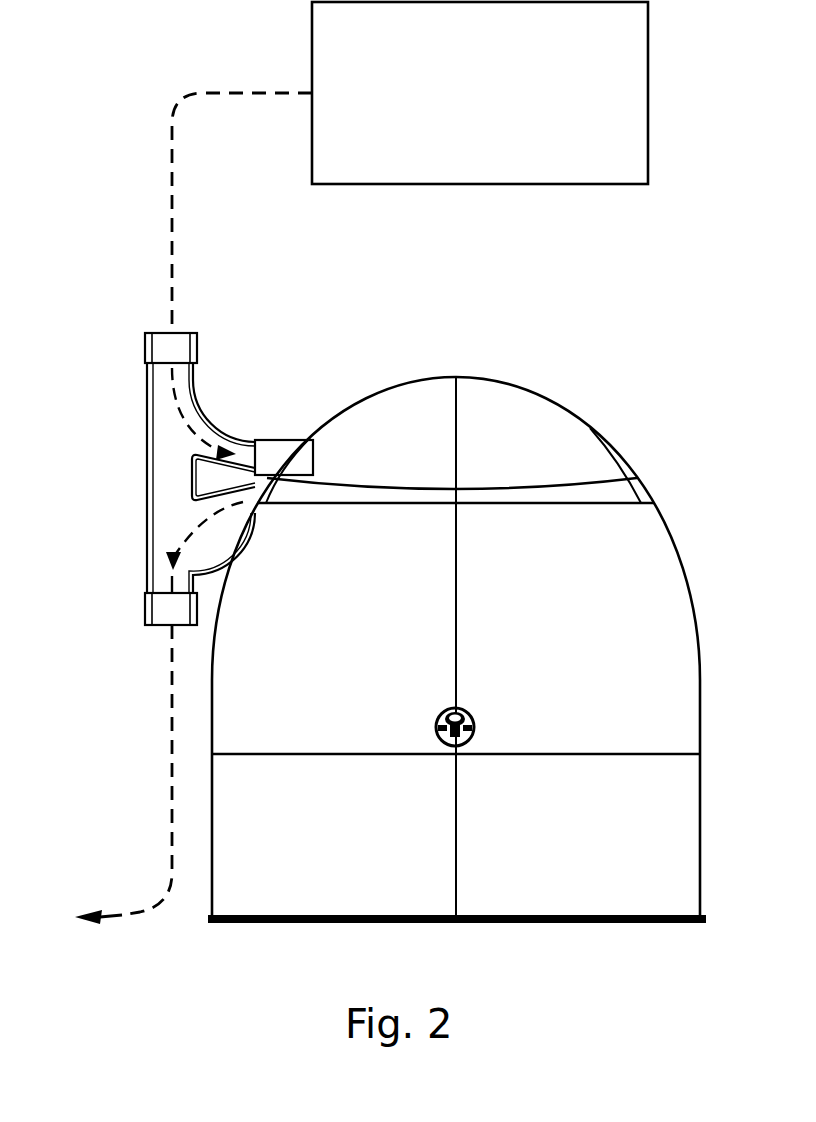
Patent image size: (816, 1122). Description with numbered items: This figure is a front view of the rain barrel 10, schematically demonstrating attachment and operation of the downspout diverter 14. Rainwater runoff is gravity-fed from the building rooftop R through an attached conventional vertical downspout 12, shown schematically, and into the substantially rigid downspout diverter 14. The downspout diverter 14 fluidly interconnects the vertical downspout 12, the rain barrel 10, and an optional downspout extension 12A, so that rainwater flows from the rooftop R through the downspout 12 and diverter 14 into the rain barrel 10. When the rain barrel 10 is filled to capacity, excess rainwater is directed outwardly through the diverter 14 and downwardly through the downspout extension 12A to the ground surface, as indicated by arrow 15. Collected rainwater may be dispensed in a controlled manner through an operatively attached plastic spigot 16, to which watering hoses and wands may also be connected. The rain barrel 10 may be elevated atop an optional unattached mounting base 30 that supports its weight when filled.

The building rooftop R is at (607, 72).
The rain barrel 10 is at (690, 445).
The vertical downspout 12 is at (173, 243).
The downspout extension 12A is at (172, 803).
The downspout diverter 14 is at (143, 497).
The arrow 15 is at (131, 908).
The spigot 16 is at (474, 712).
The mounting base 30 is at (344, 844).